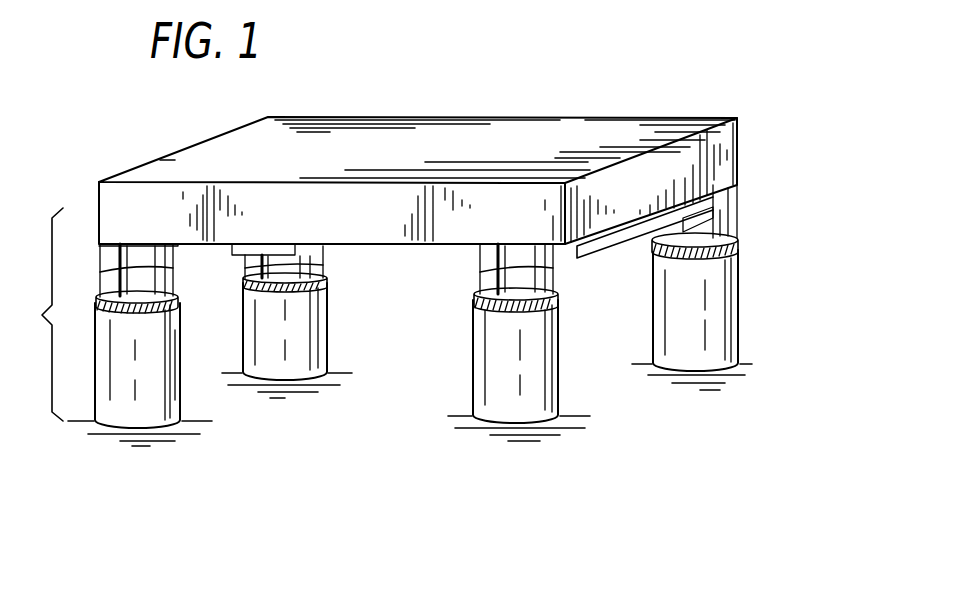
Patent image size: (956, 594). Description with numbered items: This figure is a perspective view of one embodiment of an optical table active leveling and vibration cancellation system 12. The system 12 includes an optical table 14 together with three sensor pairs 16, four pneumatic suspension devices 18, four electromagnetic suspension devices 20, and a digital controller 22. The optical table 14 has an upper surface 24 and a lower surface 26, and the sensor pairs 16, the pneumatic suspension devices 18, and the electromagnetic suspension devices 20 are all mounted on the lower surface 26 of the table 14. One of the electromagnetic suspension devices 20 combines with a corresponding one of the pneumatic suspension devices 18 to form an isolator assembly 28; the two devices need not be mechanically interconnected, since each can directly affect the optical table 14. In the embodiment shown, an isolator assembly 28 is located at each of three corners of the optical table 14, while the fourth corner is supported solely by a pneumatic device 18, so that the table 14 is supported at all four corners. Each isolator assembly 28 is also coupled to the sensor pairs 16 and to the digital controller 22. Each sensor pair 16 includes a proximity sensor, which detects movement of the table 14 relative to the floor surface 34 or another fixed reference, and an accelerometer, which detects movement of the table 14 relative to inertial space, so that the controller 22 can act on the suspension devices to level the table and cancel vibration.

The optical table active leveling and vibration cancellation system 12 is at (752, 209).
The optical table 14 is at (601, 136).
The sensor pairs 16 is at (103, 270).
The pneumatic suspension devices 18 is at (165, 286).
The electromagnetic suspension devices 20 is at (154, 266).
The digital controller 22 is at (645, 226).
The upper surface 24 is at (437, 135).
The lower surface 26 is at (664, 212).
The isolator assembly 28 is at (36, 314).
The floor surface 34 is at (748, 365).